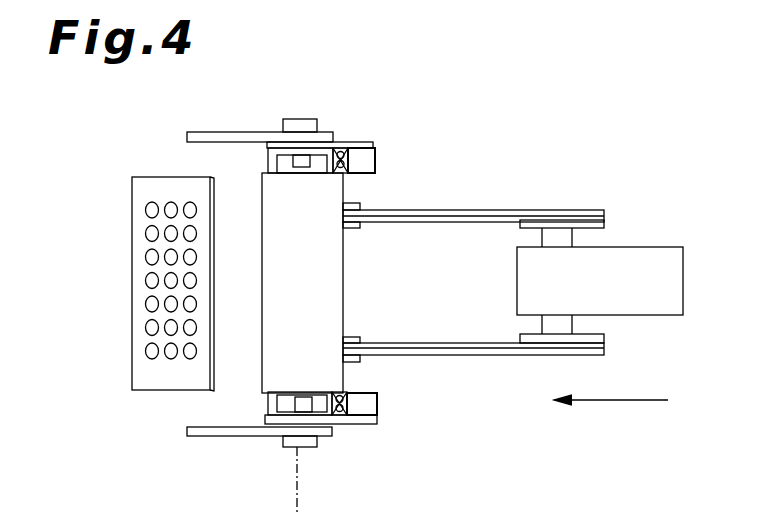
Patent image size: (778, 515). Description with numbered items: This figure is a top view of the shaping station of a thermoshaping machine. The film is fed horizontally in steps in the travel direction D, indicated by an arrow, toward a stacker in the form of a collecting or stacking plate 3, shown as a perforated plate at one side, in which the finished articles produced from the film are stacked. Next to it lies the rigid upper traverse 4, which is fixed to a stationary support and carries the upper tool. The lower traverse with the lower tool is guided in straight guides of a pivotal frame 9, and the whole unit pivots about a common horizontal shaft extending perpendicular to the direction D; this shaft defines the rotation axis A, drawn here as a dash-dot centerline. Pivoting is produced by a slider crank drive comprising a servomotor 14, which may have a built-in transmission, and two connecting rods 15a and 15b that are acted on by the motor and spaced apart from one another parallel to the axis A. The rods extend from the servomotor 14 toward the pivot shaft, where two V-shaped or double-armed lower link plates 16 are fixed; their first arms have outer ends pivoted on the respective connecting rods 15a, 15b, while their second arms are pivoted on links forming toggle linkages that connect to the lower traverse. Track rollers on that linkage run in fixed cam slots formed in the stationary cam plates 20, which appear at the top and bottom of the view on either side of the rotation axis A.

The stacking plate 3 is at (145, 197).
The upper traverse 4 is at (285, 240).
The pivotal frame 9 is at (375, 158).
The servomotor 14 is at (636, 262).
The connecting rod 15a is at (500, 355).
The connecting rod 15b is at (490, 211).
The lower link plate 16 is at (356, 338).
The cam plate 20 is at (234, 132).
The rotation axis A is at (297, 483).
The travel direction D is at (615, 400).